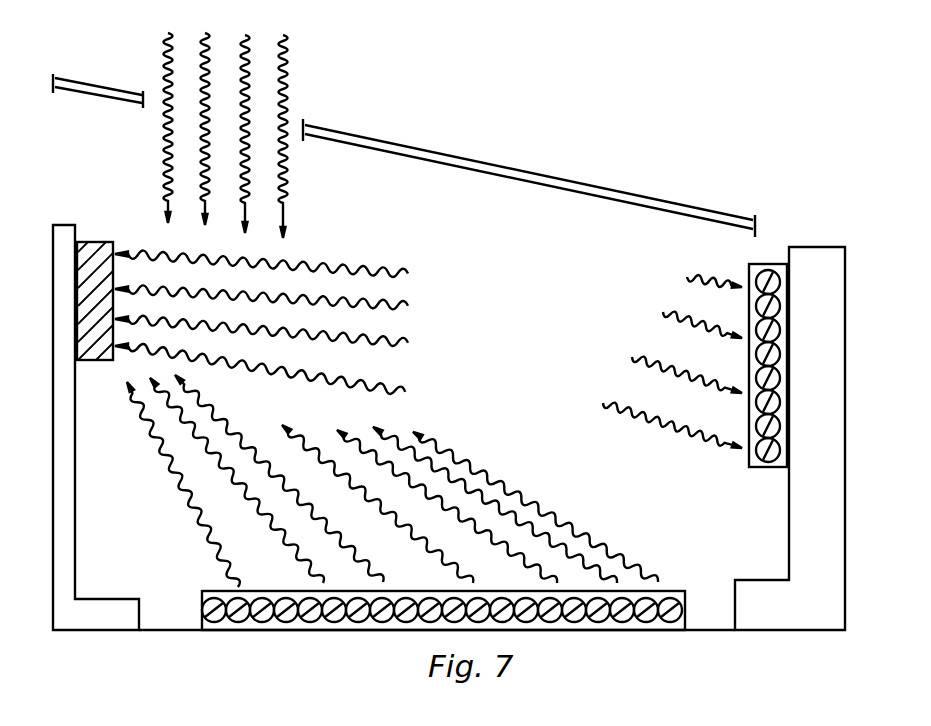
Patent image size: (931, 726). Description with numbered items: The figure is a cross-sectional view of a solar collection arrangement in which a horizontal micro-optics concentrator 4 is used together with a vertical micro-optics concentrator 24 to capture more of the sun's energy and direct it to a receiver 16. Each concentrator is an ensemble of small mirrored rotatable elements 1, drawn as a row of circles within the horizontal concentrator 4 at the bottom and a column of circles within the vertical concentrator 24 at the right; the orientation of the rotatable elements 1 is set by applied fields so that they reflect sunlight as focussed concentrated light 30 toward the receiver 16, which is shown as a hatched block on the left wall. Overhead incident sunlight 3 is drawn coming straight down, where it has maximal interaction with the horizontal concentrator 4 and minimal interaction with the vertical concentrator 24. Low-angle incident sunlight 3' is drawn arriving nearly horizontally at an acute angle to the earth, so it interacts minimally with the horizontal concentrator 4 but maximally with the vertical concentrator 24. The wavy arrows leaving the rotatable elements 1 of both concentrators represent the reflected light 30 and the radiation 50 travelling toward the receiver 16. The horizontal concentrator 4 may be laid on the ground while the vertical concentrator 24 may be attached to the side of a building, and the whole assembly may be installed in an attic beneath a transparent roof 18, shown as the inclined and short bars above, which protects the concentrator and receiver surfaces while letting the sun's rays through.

The rotatable elements 1 is at (717, 619).
The incident sunlight 3 is at (226, 135).
The incident sunlight 3' is at (672, 361).
The horizontal micro-optics concentrator 4 is at (270, 573).
The receiver 16 is at (98, 242).
The transparent roof 18 is at (80, 82).
The vertical micro-optics concentrator 24 is at (714, 493).
The focussed concentrated light 30 is at (358, 556).
The radiation toward absorber 50 is at (378, 305).